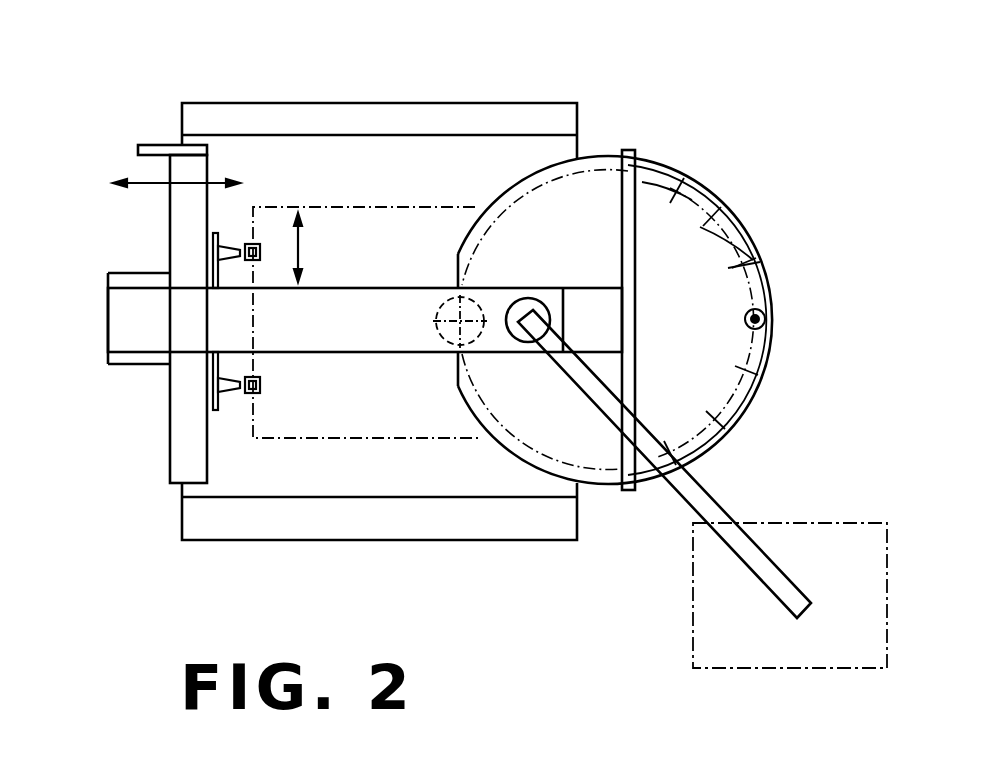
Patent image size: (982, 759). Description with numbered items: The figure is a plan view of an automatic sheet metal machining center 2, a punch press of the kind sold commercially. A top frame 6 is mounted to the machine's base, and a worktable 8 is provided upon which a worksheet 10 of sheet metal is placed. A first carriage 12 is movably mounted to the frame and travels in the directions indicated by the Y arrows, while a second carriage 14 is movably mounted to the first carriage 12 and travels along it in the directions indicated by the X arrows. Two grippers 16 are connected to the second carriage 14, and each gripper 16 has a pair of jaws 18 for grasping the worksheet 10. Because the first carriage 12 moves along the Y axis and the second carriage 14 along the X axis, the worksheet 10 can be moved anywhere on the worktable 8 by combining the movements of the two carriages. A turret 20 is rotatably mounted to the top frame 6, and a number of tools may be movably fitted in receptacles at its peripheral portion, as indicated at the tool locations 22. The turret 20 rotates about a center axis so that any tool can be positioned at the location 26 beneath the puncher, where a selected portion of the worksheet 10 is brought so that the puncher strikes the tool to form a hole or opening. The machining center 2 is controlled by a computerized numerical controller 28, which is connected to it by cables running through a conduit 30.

The automatic sheet metal machining center 2 is at (132, 489).
The top frame 6 is at (120, 318).
The worktable 8 is at (503, 148).
The worksheet 10 is at (372, 420).
The first carriage 12 is at (185, 402).
The second carriage 14 is at (219, 412).
The gripper 16 is at (223, 410).
The jaws 18 is at (257, 403).
The turret 20 is at (687, 223).
The tool locations 22 is at (763, 360).
The punching location 26 is at (458, 307).
The computerized numerical controller 28 is at (729, 584).
The conduit 30 is at (692, 500).